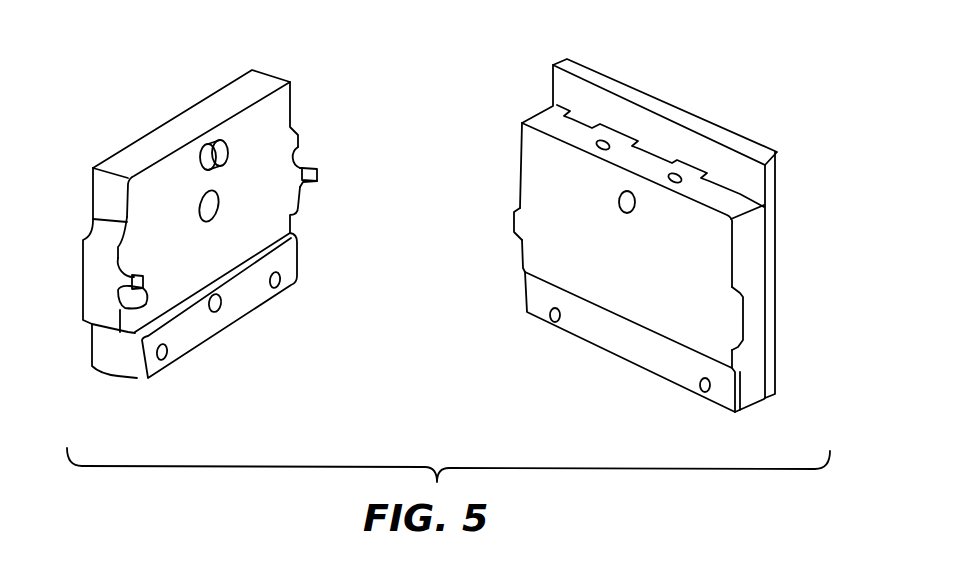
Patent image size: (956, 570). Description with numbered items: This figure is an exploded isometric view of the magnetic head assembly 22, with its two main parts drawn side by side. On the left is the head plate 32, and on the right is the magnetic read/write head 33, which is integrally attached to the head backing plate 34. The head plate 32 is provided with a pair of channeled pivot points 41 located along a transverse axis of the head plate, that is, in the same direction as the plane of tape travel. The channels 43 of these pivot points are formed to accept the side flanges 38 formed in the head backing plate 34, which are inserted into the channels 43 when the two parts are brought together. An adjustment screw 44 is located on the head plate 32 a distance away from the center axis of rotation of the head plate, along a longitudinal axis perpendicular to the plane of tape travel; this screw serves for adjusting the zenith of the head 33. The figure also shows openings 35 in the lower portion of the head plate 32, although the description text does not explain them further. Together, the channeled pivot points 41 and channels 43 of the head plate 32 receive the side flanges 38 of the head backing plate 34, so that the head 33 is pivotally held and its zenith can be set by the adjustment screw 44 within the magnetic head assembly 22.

The magnetic head assembly 22 is at (448, 392).
The head plate 32 is at (147, 133).
The magnetic read/write head 33 is at (662, 89).
The head backing plate 34 is at (628, 282).
The mounting holes 35 is at (280, 286).
The side flanges 38 is at (514, 216).
The channeled pivot points 41 is at (318, 178).
The channels 43 is at (302, 150).
The adjustment screw 44 is at (229, 150).